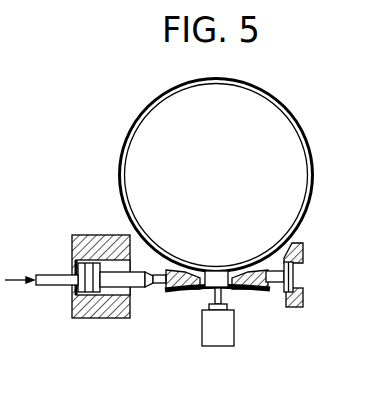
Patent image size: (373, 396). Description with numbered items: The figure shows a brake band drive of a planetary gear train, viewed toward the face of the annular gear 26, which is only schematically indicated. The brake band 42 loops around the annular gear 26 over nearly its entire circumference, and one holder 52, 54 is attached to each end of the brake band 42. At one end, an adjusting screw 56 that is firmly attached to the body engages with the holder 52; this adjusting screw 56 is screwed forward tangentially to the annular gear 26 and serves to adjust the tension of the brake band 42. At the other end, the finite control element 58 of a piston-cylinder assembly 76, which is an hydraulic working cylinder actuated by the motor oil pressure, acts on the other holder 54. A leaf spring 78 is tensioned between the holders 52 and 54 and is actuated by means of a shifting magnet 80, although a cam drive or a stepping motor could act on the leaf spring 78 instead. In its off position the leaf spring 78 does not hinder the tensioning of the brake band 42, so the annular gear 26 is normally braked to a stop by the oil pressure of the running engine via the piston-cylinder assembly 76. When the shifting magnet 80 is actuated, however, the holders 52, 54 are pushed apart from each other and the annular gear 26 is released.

The annular gear 26 is at (262, 107).
The brake band 42 is at (300, 104).
The holder 52 is at (258, 292).
The holder 54 is at (185, 291).
The adjusting screw 56 is at (300, 274).
The finite control element 58 is at (110, 297).
The piston-cylinder assembly 76 is at (80, 224).
The leaf spring 78 is at (230, 292).
The shifting magnet 80 is at (222, 338).